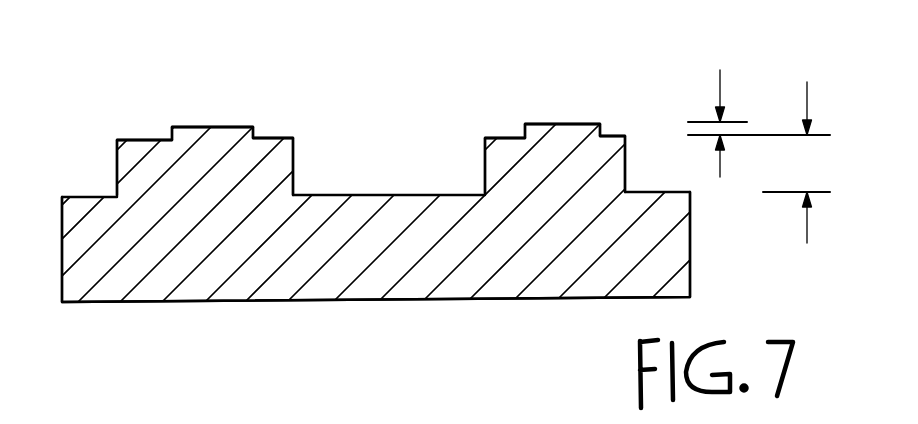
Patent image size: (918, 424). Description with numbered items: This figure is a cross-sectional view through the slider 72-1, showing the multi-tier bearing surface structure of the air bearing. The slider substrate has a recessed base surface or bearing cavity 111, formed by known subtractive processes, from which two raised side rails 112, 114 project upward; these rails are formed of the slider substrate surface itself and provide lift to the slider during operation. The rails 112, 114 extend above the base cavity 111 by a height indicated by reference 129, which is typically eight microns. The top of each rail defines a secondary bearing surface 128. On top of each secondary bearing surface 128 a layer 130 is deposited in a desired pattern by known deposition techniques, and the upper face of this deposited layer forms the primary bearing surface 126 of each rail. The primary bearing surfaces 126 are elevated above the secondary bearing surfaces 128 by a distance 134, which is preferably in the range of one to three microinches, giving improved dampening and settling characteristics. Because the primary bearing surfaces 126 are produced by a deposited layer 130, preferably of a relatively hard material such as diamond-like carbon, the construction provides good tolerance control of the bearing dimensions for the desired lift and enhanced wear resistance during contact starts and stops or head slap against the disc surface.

The slider 72-1 is at (657, 63).
The base surface or bearing cavity 111 is at (362, 192).
The side rail 112 is at (273, 118).
The side rail 114 is at (548, 123).
The primary bearing surface 126 is at (192, 127).
The secondary bearing surface 128 is at (135, 140).
The deposited layer 130 is at (256, 134).
The distance 134 is at (723, 92).
The rail height 129 is at (822, 100).